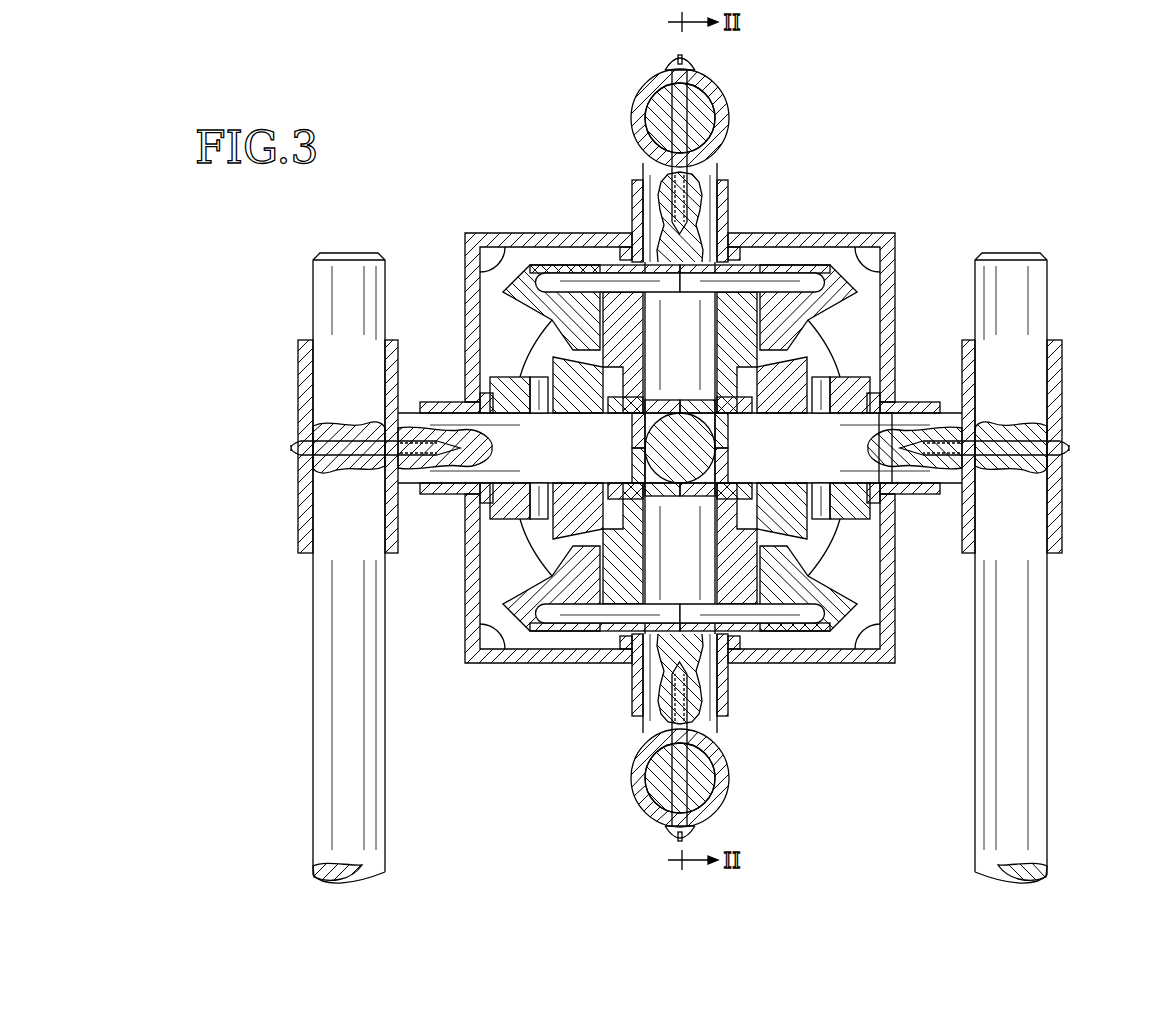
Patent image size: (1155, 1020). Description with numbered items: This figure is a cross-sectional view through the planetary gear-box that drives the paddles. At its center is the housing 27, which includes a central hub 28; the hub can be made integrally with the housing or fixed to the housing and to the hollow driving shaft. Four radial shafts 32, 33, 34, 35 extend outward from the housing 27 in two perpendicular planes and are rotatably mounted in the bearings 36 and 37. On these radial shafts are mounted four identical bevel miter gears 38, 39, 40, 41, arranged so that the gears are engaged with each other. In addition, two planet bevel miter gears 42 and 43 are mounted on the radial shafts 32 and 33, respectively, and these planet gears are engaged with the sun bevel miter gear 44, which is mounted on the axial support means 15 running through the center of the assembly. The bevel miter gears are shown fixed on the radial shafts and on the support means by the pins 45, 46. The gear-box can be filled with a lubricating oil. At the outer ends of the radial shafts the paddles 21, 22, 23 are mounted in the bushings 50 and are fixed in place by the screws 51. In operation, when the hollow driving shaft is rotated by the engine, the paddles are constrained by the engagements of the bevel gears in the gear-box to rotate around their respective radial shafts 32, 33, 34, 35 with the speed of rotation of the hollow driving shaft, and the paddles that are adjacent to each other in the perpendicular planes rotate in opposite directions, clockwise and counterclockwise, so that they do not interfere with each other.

The axial support means 15 is at (552, 520).
The paddle 21 is at (325, 625).
The paddle 22 is at (650, 778).
The paddle 23 is at (718, 112).
The housing 27 is at (510, 665).
The central hub 28 is at (862, 300).
The radial shaft 32 is at (710, 672).
The radial shaft 33 is at (708, 233).
The radial shaft 34 is at (895, 478).
The radial shaft 35 is at (472, 485).
The bearing 36 is at (638, 220).
The bearing 37 is at (855, 340).
The bevel miter gear 38 is at (660, 462).
The bevel miter gear 39 is at (578, 290).
The bevel miter gear 40 is at (515, 377).
The bevel miter gear 41 is at (885, 528).
The planet bevel miter gear 42 is at (850, 650).
The planet bevel miter gear 43 is at (842, 290).
The sun bevel miter gear 44 is at (865, 575).
The pin 45 is at (545, 266).
The pin 46 is at (860, 378).
The bushing 50 is at (712, 88).
The screw 51 is at (664, 82).